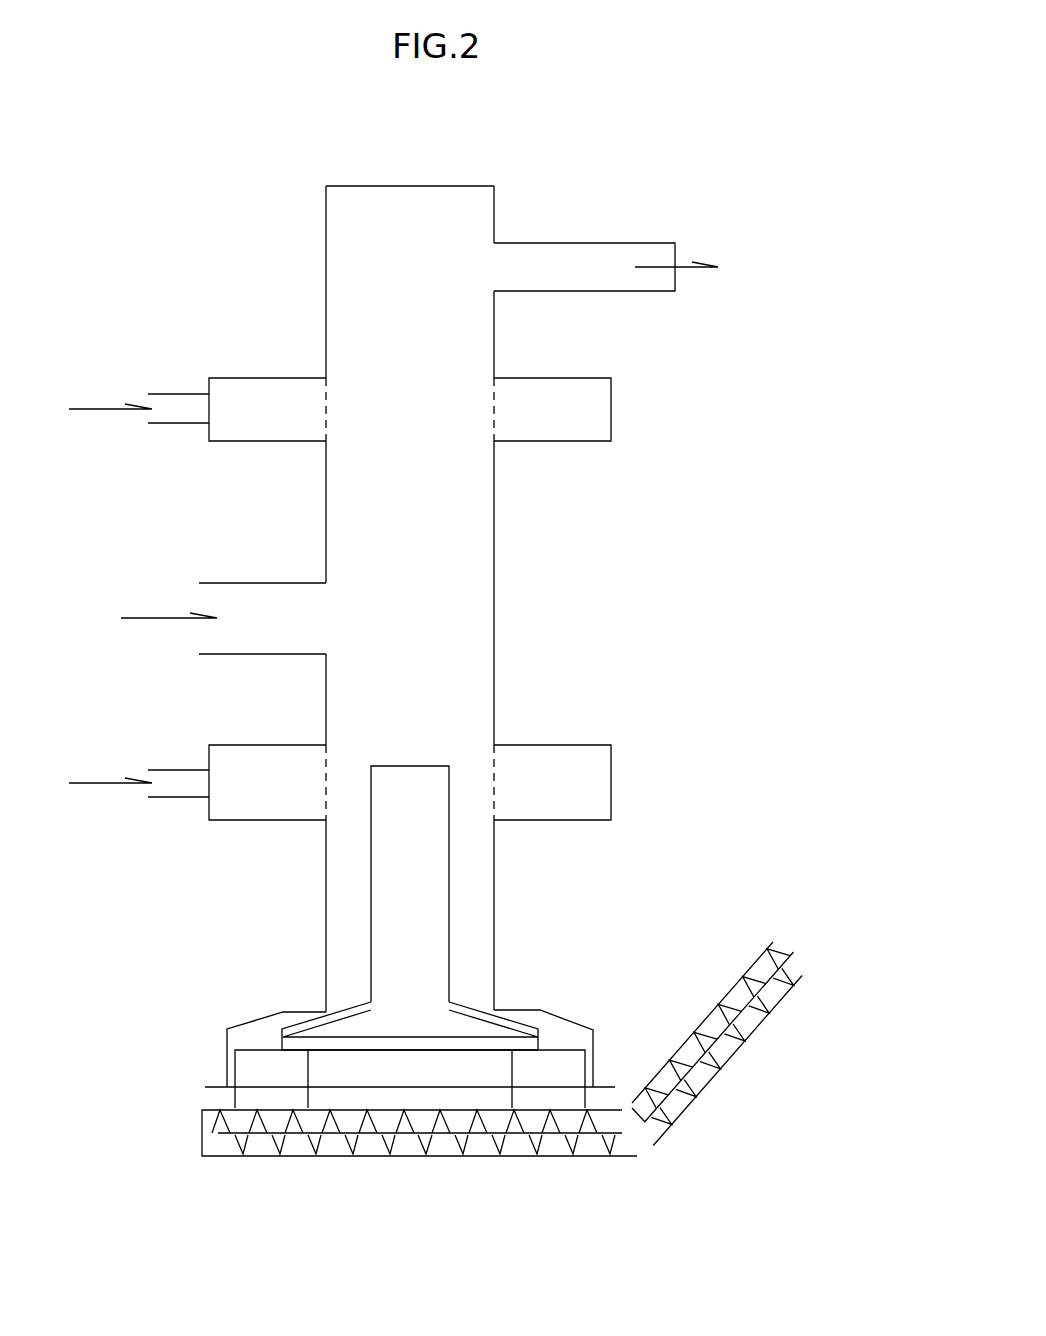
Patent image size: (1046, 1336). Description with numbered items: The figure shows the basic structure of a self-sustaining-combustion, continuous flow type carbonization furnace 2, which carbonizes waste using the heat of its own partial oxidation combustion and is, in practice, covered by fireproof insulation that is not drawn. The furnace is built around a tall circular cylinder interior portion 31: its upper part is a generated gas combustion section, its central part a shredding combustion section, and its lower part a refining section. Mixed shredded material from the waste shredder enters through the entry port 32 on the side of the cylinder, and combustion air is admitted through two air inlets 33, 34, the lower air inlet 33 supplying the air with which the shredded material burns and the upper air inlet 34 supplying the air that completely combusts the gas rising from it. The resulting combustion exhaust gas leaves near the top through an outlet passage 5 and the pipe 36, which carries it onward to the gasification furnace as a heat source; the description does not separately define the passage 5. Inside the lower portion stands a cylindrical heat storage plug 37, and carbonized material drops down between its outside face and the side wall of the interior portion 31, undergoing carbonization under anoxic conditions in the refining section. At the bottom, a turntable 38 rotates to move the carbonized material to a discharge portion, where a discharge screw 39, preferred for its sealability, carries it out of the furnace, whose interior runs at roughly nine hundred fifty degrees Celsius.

The carbonization furnace 2 is at (328, 179).
The gas outlet pipe 5 is at (578, 267).
The circular cylinder interior portion 31 is at (347, 328).
The entry port 32 is at (243, 595).
The air inlet 33 is at (233, 760).
The air inlet 34 is at (228, 392).
The pipe 36 is at (660, 283).
The cylindrical heat storage plug 37 is at (412, 780).
The turntable 38 is at (455, 1030).
The discharge screw 39 is at (597, 1143).